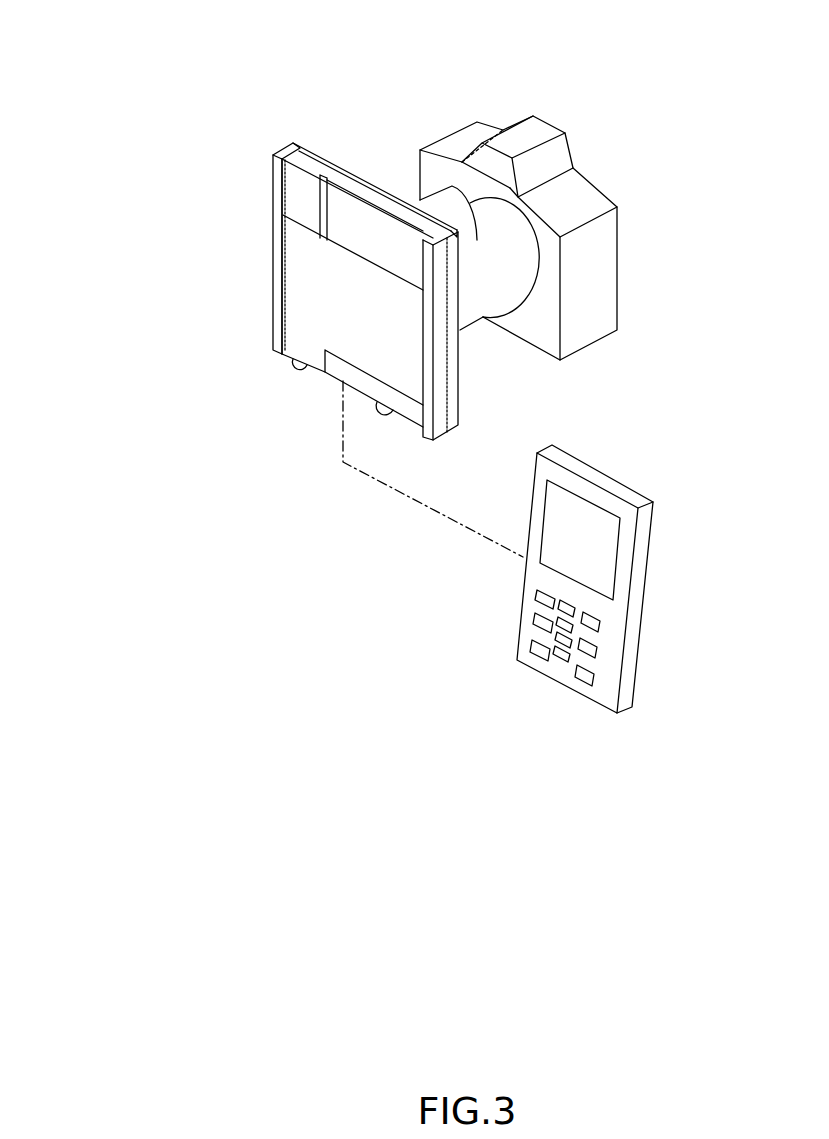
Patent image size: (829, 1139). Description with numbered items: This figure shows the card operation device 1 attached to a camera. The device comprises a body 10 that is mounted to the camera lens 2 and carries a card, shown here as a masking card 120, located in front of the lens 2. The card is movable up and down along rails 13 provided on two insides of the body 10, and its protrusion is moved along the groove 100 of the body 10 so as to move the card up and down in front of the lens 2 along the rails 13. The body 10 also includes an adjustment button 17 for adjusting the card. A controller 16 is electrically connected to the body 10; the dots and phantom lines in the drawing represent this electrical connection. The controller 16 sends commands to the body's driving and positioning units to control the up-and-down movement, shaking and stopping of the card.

The card operation device 1 is at (198, 277).
The body 10 is at (358, 176).
The rails 13 is at (277, 173).
The groove 100 is at (327, 227).
The masking card 120 is at (313, 342).
The adjustment button 17 is at (305, 364).
The camera lens 2 is at (472, 323).
The controller 16 is at (652, 563).